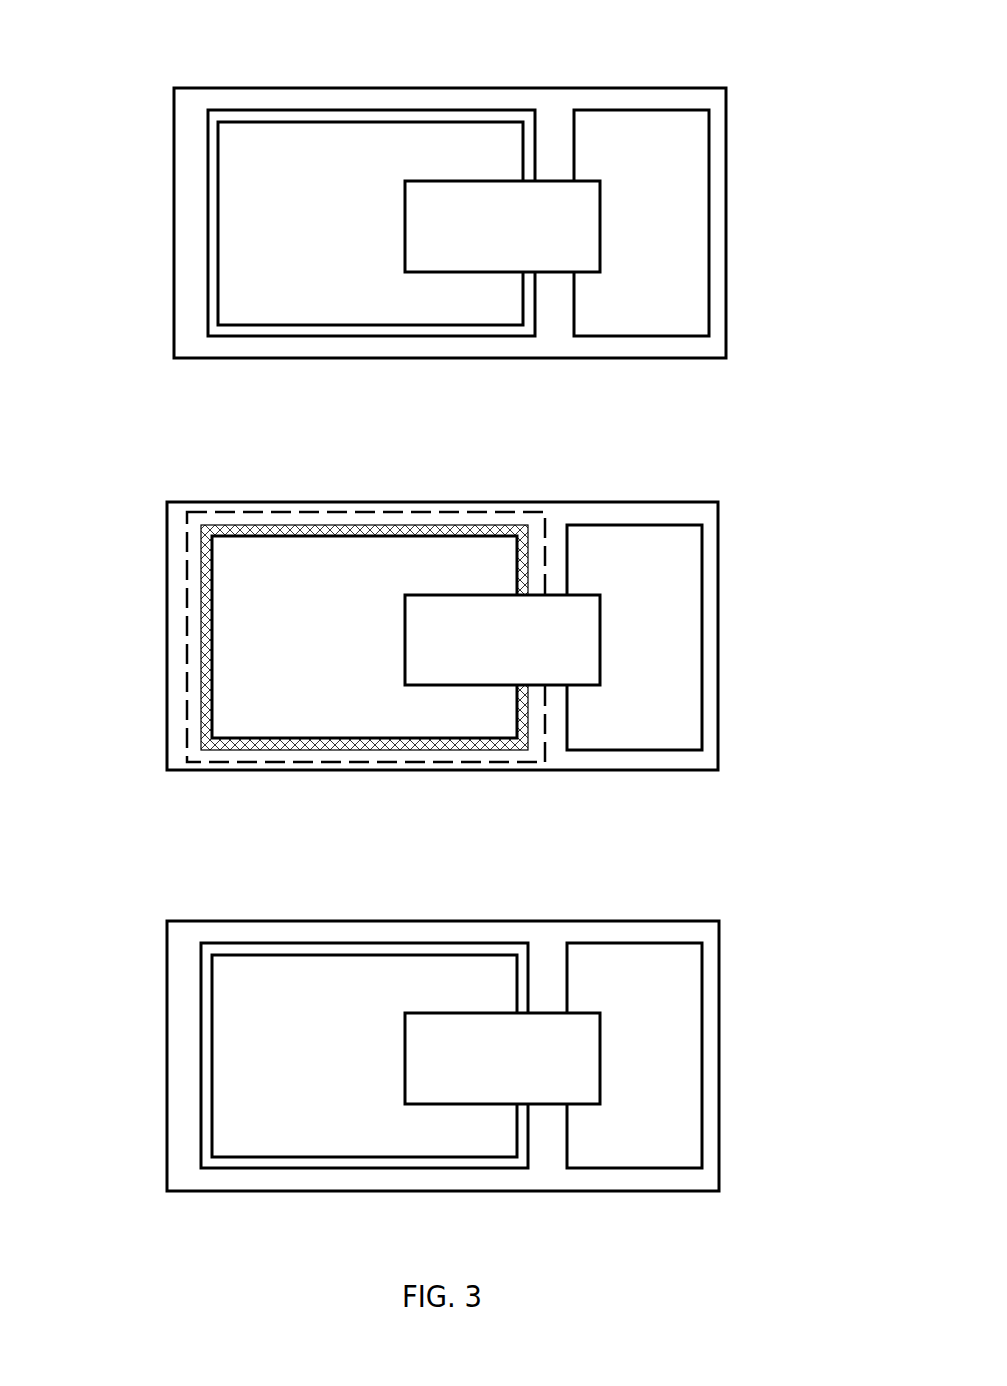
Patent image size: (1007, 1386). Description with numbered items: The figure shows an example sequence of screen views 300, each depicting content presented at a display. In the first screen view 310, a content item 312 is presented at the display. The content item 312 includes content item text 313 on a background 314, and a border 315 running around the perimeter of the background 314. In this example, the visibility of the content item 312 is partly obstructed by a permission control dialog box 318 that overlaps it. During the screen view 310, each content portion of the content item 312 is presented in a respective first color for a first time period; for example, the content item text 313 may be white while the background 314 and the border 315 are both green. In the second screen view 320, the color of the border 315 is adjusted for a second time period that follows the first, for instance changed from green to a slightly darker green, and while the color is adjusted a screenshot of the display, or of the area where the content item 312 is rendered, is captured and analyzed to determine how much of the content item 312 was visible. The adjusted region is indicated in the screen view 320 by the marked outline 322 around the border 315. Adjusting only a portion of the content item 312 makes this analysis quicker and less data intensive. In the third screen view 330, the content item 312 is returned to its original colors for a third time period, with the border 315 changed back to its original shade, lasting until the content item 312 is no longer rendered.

The sequence of screen views 300 is at (777, 72).
The screen view 310 is at (140, 106).
The content item 312 is at (238, 206).
The content item text 313 is at (296, 228).
The background 314 is at (253, 289).
The border 315 is at (208, 338).
The permission control dialog box 318 is at (600, 226).
The screen view 320 is at (131, 518).
The selection indicator 322 is at (183, 701).
The screen view 330 is at (131, 936).